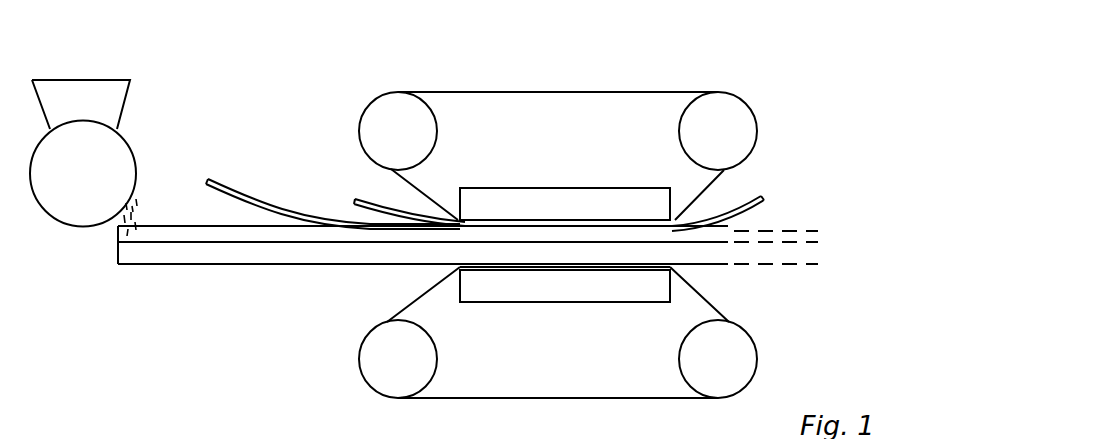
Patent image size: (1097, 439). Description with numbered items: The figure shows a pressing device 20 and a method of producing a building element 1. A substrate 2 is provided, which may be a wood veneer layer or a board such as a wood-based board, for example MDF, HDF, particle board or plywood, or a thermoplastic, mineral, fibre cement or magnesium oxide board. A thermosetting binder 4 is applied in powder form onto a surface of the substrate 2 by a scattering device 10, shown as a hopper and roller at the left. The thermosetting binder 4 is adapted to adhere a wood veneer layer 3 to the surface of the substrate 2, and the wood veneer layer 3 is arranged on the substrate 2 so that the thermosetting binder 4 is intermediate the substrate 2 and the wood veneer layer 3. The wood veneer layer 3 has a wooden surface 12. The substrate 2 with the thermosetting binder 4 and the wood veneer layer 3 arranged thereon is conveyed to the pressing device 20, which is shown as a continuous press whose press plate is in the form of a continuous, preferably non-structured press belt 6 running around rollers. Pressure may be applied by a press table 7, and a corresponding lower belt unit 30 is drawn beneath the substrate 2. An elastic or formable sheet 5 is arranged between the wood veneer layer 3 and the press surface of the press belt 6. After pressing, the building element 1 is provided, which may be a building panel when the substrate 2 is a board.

The building element 1 is at (732, 282).
The substrate 2 is at (213, 255).
The wood veneer layer 3 is at (230, 187).
The thermosetting binder 4 is at (112, 232).
The elastic or formable sheet 5 is at (767, 203).
The press belt 6 is at (717, 185).
The press table 7 is at (567, 210).
The scattering device 10 is at (133, 147).
The wooden surface 12 is at (273, 210).
The pressing device 20 is at (648, 85).
The lower belt press unit 30 is at (358, 330).